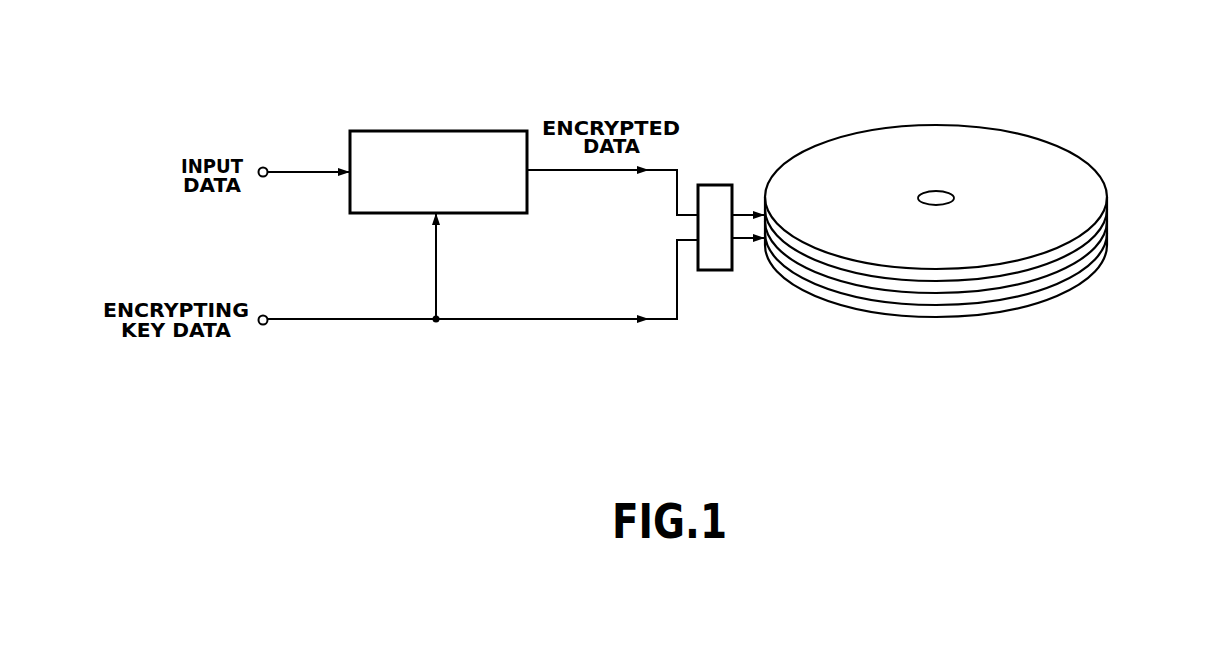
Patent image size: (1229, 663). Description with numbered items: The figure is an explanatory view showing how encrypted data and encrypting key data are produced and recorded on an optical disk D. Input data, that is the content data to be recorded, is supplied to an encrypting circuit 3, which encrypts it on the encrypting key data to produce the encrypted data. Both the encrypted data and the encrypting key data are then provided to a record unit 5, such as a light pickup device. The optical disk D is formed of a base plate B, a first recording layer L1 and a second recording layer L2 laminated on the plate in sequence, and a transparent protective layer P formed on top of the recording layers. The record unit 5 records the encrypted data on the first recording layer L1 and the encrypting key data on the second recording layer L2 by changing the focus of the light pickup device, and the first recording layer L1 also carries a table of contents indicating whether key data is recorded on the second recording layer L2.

The encrypting circuit 3 is at (453, 131).
The record unit 5 is at (720, 185).
The optical disk D is at (977, 174).
The transparent protective layer P is at (1083, 167).
The second recording layer L2 is at (1103, 233).
The first recording layer L1 is at (1097, 254).
The base plate B is at (1087, 273).